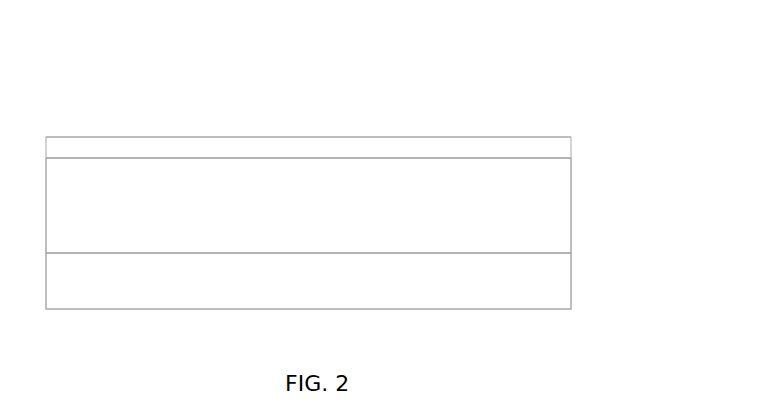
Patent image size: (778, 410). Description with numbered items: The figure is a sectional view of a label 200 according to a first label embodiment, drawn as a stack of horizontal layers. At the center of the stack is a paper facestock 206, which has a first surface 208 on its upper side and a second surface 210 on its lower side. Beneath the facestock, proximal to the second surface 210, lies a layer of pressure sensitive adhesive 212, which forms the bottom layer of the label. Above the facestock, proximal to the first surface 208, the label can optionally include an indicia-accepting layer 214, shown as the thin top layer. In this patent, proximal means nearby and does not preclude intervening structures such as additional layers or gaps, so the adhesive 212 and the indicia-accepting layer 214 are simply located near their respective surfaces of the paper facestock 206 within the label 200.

The label 200 is at (636, 118).
The paper facestock 206 is at (559, 213).
The first surface 208 is at (436, 156).
The second surface 210 is at (479, 255).
The layer of pressure sensitive adhesive 212 is at (556, 277).
The indicia-accepting layer 214 is at (129, 149).